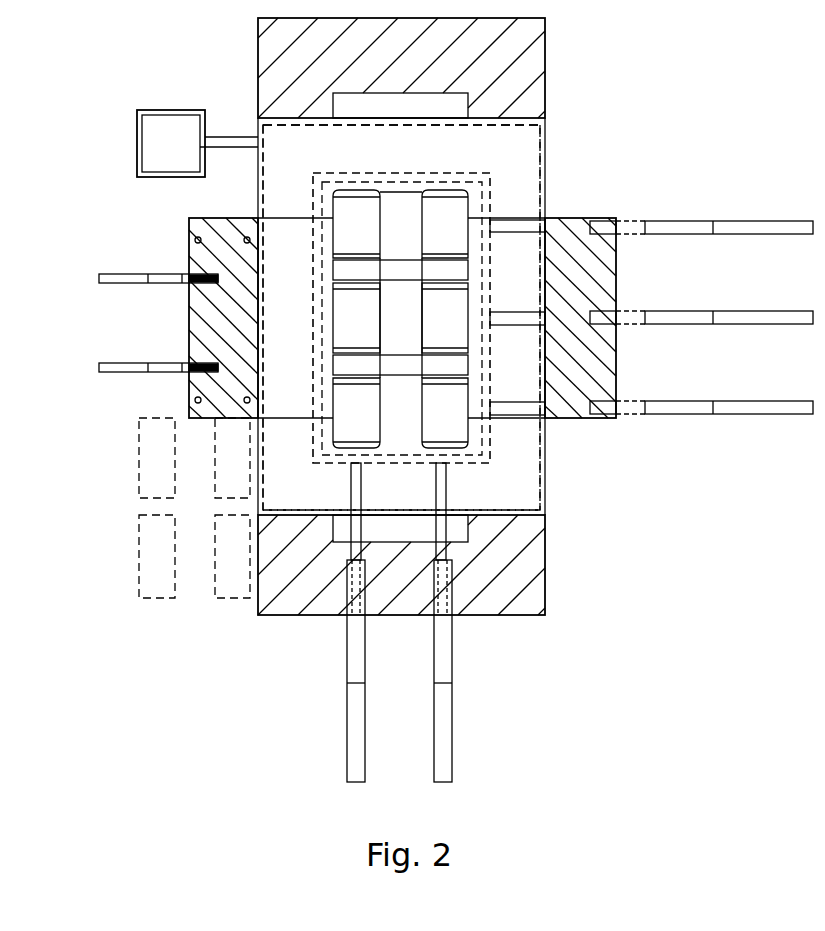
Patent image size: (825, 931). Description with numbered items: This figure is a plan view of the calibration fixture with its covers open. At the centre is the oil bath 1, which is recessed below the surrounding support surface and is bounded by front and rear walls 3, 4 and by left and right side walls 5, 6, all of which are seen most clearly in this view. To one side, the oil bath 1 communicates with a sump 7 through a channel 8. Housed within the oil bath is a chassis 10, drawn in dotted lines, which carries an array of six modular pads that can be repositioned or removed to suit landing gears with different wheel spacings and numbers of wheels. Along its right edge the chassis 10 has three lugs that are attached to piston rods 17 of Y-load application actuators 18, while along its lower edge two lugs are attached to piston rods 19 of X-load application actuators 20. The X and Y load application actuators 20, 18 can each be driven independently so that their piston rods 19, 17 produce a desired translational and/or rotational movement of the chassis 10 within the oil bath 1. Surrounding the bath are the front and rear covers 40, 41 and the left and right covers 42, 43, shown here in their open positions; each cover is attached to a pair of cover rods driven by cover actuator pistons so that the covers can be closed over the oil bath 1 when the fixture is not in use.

The oil bath 1 is at (523, 160).
The front wall 3 is at (306, 126).
The rear wall 4 is at (303, 510).
The left side wall 5 is at (260, 332).
The right side wall 6 is at (536, 465).
The sump 7 is at (167, 110).
The channel 8 is at (238, 137).
The chassis 10 is at (398, 172).
The piston rods 17 is at (500, 233).
The Y-load application actuators 18 is at (679, 234).
The piston rods 19 is at (436, 472).
The X-load application actuators 20 is at (434, 658).
The front cover 40 is at (258, 50).
The rear cover 41 is at (293, 607).
The left cover 42 is at (196, 311).
The right cover 43 is at (572, 224).